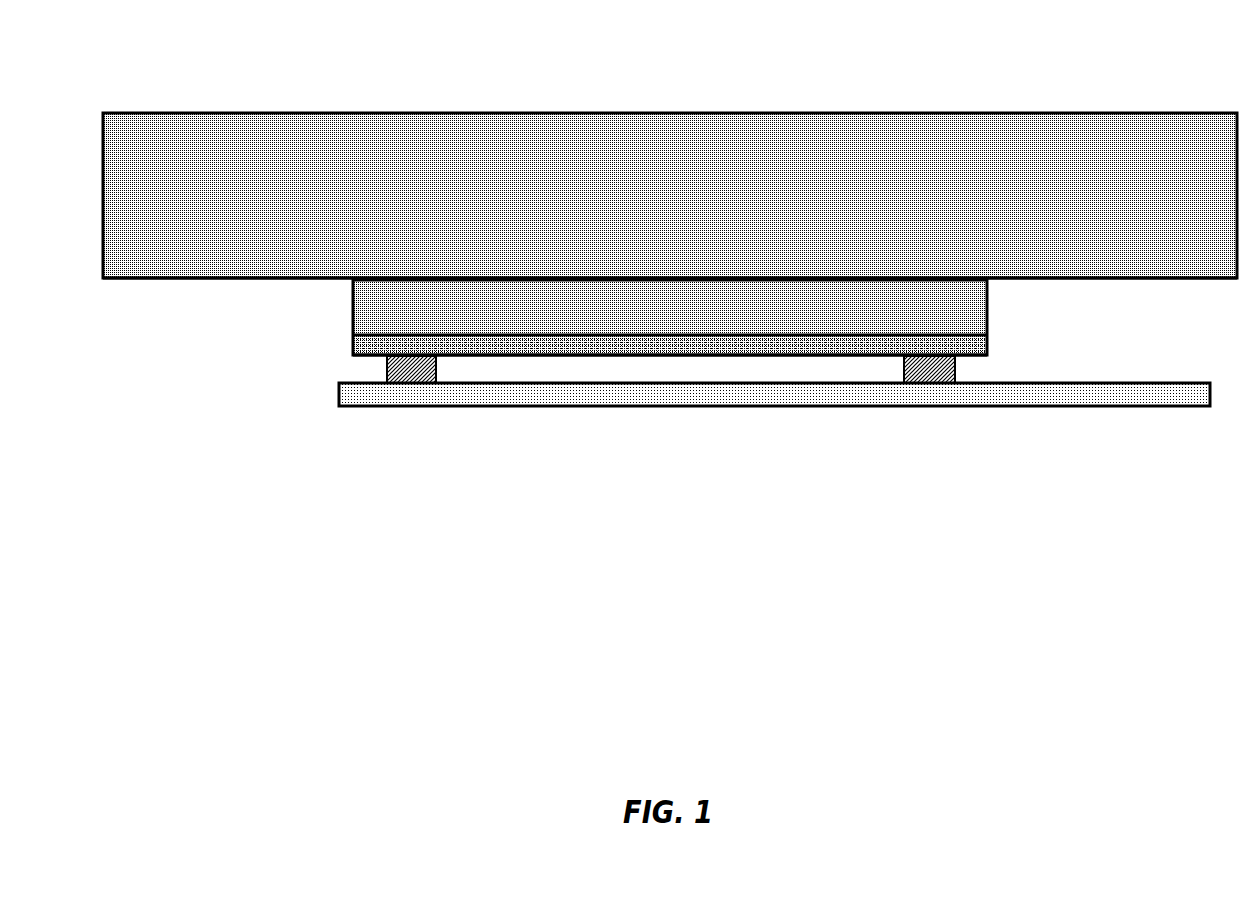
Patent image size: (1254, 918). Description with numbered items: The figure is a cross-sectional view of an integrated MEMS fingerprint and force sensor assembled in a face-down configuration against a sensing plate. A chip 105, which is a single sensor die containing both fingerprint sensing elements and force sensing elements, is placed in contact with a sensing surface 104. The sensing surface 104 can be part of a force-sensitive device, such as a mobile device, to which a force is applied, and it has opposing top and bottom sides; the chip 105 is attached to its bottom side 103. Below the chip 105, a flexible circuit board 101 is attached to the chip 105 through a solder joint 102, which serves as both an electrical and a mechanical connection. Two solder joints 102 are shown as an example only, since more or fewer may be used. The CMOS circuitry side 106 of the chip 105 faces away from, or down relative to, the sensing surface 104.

The flexible circuit board 101 is at (1107, 409).
The solder joint 102 is at (412, 387).
The bottom side 103 is at (207, 282).
The sensing surface 104 is at (670, 100).
The chip 105 is at (999, 313).
The CMOS circuitry side 106 is at (682, 357).